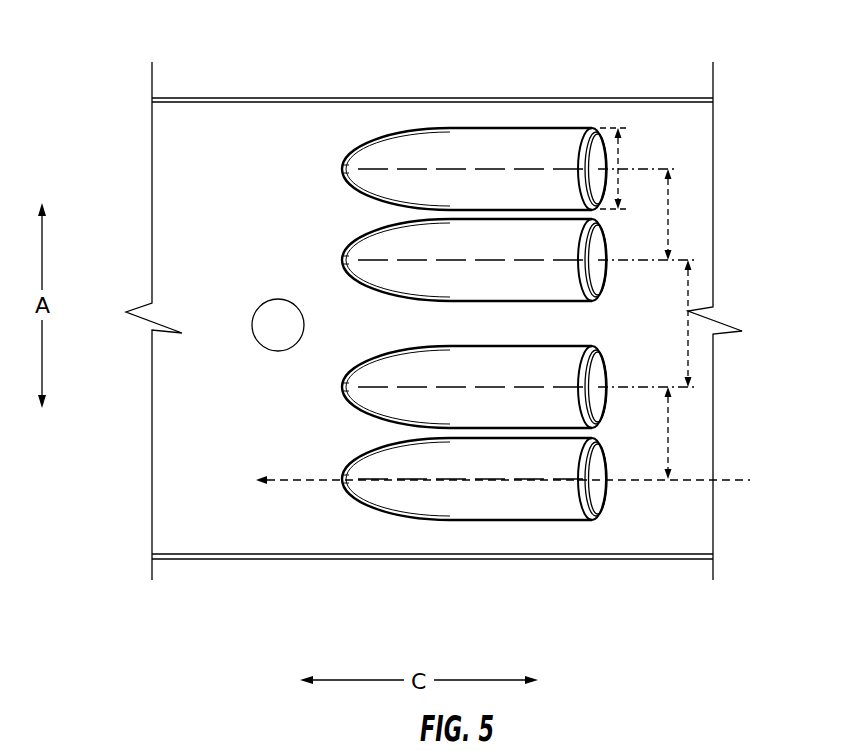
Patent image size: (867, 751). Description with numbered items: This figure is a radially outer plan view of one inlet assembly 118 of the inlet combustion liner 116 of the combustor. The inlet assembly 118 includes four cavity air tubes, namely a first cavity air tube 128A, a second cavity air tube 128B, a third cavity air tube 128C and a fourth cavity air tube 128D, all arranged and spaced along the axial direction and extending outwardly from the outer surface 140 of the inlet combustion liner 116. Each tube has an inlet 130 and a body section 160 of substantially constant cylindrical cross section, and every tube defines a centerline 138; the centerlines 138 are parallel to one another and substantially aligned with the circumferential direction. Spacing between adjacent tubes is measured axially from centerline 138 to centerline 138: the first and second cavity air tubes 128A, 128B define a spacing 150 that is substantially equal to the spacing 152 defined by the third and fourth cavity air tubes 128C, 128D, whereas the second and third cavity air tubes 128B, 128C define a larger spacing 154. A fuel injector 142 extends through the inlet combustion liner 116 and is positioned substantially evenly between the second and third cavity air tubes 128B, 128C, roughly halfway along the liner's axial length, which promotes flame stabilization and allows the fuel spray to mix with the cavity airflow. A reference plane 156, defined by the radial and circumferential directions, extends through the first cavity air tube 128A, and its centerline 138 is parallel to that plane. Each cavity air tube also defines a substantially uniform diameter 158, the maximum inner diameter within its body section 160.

The inlet combustion liner 116 is at (746, 113).
The inlet assembly 118 is at (315, 112).
The outer surface 140 is at (205, 122).
The fuel injector 142 is at (244, 329).
The first cavity air tube 128A is at (503, 502).
The second cavity air tube 128B is at (472, 407).
The third cavity air tube 128C is at (502, 233).
The fourth cavity air tube 128D is at (543, 137).
The inlet 130 is at (596, 360).
The centerline 138 is at (637, 165).
The spacing 150 is at (672, 427).
The spacing 152 is at (668, 210).
The spacing 154 is at (690, 298).
The reference plane 156 is at (310, 485).
The diameter 158 is at (606, 126).
The body section 160 is at (476, 141).